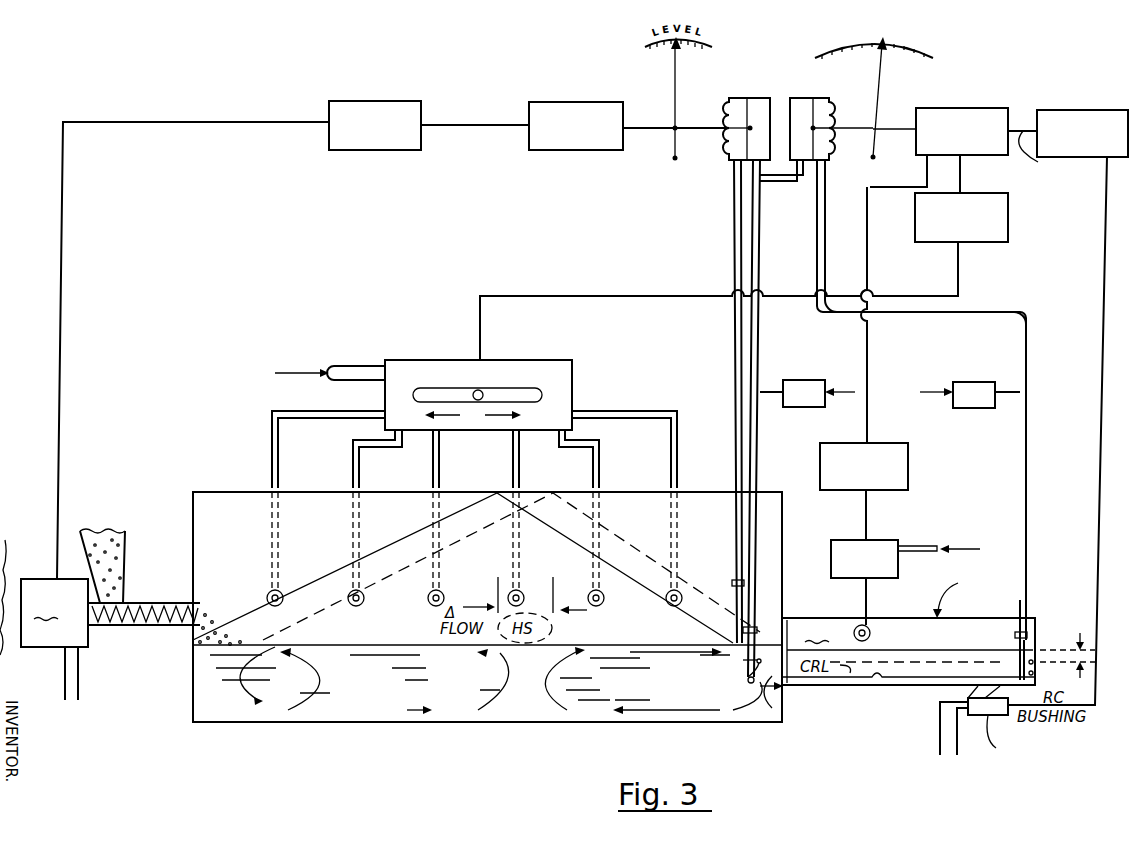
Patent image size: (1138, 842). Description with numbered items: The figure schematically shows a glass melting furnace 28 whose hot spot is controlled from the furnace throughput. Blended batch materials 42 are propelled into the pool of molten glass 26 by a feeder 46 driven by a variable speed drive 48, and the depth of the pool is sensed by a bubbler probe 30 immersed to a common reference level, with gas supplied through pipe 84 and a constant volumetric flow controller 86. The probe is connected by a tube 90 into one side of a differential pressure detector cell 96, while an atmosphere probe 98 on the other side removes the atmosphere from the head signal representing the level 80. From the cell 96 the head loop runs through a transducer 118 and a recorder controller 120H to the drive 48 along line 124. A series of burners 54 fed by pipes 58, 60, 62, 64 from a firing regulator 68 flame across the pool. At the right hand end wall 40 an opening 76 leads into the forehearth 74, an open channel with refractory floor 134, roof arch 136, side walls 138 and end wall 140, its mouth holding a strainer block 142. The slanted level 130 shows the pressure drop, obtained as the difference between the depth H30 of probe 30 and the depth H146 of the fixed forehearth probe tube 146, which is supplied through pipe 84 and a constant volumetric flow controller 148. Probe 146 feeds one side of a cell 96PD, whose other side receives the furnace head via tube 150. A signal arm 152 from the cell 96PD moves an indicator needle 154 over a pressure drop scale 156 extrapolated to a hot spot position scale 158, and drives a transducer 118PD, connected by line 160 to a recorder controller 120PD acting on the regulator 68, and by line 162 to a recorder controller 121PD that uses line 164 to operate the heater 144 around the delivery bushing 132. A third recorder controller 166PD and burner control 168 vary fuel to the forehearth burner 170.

The signal line 124 is at (199, 121).
The recorder controller 120H is at (337, 101).
The transducer 118 is at (533, 102).
The differential pressure detector cell 96 is at (738, 97).
The differential pressure detector cell 96PD is at (835, 97).
The tube 150 is at (805, 183).
The tube 90 is at (760, 254).
The atmosphere probe 98 is at (733, 582).
The bubbler probe 30 is at (752, 683).
The depth of probe 30 H30 is at (740, 662).
The pressure drop indicator needle 154 is at (886, 90).
The hot spot position scale 158 is at (932, 48).
The pressure drop scale 156 is at (930, 62).
The transducer 118PD is at (925, 110).
The recorder controller 121PD is at (1044, 111).
The line 160 is at (961, 175).
The line 162 is at (1046, 156).
The pressure drop signal arm 152 is at (868, 142).
The recorder controller 120PD is at (948, 243).
The line 164 is at (1104, 234).
The firing regulator 68 is at (420, 356).
The constant volumetric flow controller 86 is at (797, 380).
The pipe 84 is at (843, 392).
The constant volumetric flow controller 148 is at (985, 382).
The recorder controller 166PD is at (893, 443).
The burner control 168 is at (850, 540).
The furnace 28 is at (191, 484).
The end wall 40 is at (790, 512).
The pipe 58 is at (298, 470).
The burner 54 is at (269, 589).
The pipe 60 is at (371, 470).
The pipe 62 is at (451, 470).
The pipe 64 is at (533, 470).
The pool of molten glass 26 is at (405, 645).
The level 80 is at (345, 645).
The feeder 46 is at (156, 603).
The blended batch materials 42 is at (230, 620).
The variable speed drive 48 is at (59, 643).
The opening 76 is at (783, 704).
The side walls 138 is at (908, 651).
The strainer block 142 is at (795, 620).
The roof arch 136 is at (921, 618).
The forehearth 74 is at (958, 594).
The forehearth probe tube 146 is at (1013, 630).
The depth of probe 146 H146 is at (1013, 672).
The forehearth burner 170 is at (871, 634).
The level 130 is at (990, 652).
The refractory floor 134 is at (868, 685).
The delivery bushing 132 is at (966, 698).
The heater 144 is at (1007, 738).
The end wall 140 is at (1040, 632).